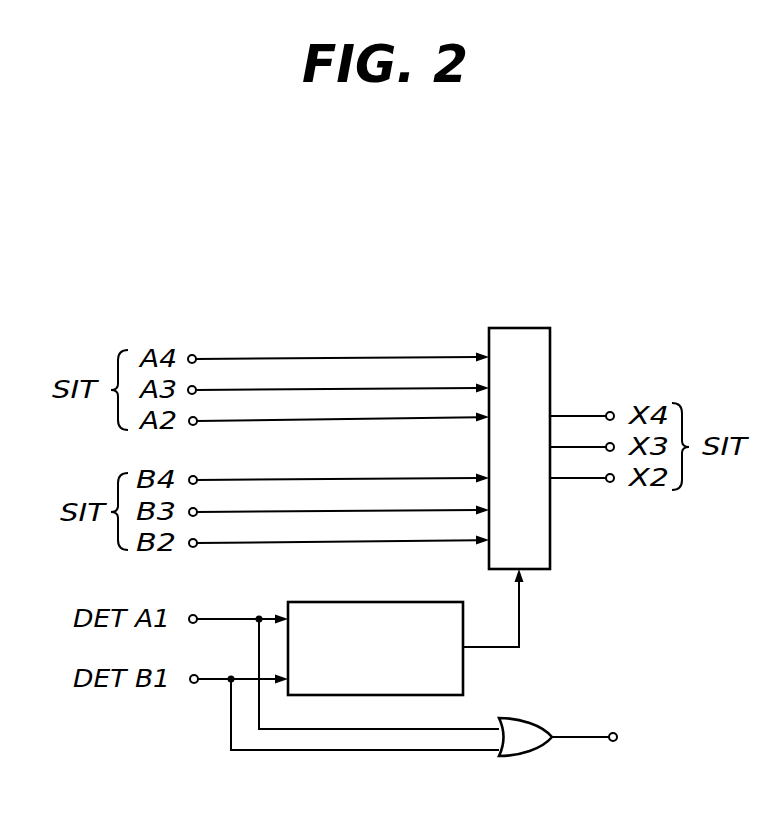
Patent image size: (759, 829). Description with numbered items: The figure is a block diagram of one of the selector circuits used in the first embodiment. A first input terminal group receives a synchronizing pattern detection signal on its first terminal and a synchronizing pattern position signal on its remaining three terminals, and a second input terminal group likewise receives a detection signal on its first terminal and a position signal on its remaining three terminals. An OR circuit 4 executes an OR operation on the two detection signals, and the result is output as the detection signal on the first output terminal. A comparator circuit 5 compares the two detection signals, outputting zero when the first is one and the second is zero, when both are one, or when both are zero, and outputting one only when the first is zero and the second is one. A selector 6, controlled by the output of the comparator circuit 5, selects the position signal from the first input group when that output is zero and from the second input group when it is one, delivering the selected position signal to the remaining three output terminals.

The OR circuit 4 is at (540, 718).
The comparator circuit 5 is at (336, 602).
The selector 6 is at (521, 328).